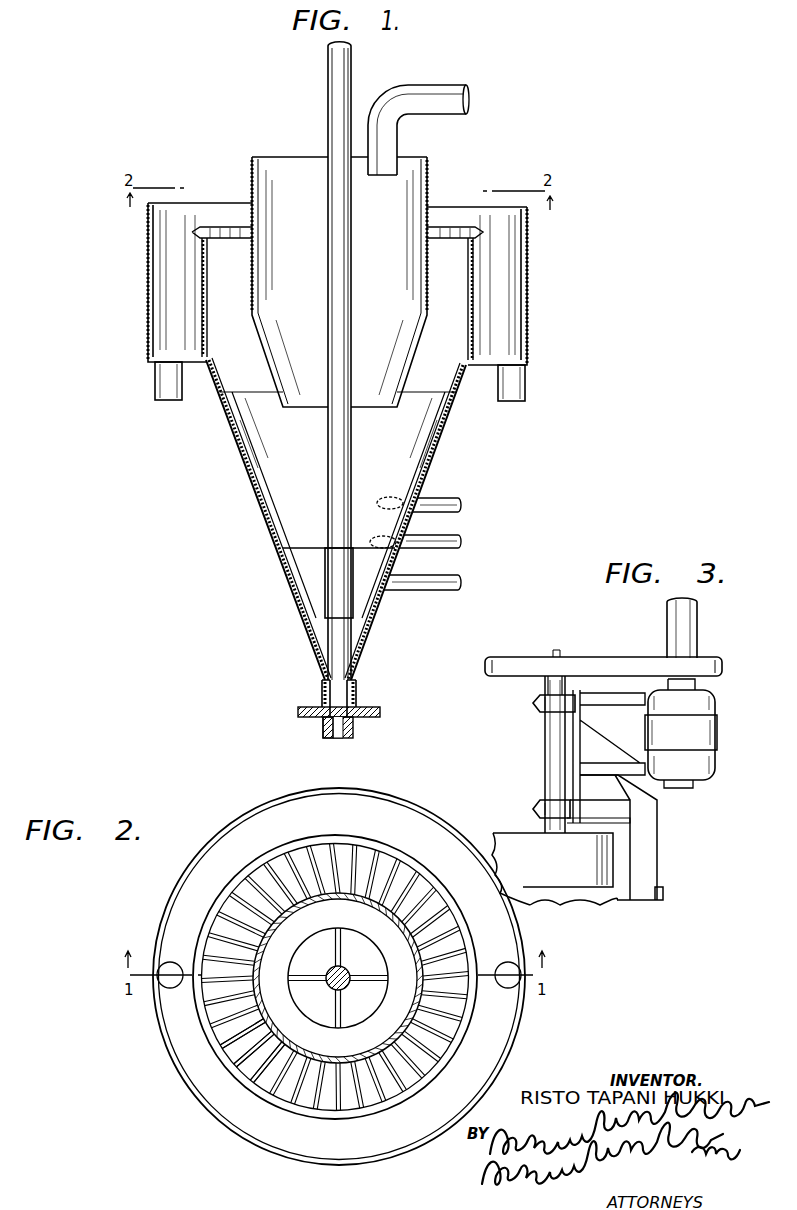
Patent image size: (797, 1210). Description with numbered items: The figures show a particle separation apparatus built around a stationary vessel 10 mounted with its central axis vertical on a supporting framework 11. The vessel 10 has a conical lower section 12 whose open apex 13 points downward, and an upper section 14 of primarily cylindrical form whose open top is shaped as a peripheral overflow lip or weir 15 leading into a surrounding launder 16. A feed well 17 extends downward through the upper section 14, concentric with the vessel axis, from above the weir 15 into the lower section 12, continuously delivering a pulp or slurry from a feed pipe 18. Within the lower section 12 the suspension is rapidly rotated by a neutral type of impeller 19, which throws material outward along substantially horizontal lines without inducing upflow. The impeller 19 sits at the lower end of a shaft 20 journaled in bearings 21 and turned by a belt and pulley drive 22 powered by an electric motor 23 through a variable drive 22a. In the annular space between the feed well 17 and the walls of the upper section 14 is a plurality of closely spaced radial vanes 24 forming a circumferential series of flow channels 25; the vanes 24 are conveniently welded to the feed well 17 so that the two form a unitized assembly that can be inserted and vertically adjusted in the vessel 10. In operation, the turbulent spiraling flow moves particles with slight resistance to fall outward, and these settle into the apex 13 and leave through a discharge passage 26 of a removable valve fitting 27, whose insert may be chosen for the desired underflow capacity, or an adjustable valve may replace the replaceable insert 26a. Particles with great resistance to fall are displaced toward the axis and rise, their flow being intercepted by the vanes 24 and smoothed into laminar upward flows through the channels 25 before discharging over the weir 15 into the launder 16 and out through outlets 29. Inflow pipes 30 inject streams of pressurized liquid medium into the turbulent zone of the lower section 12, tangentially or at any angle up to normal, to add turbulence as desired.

In FIG. 1, the stationary vessel 10 is at (454, 468).
In FIG. 3, the supporting framework 11 is at (650, 836).
In FIG. 1, the lower section 12 is at (262, 518).
In FIG. 1, the apex 13 is at (356, 693).
In FIG. 1, the upper section 14 is at (203, 308).
In FIG. 1, the peripheral overflow lip or weir 15 is at (197, 232).
In FIG. 2, the peripheral overflow lip or weir 15 is at (420, 868).
In FIG. 1, the launder 16 is at (162, 268).
In FIG. 3, the launder 16 is at (617, 900).
In FIG. 2, the launder 16 is at (217, 1118).
In FIG. 1, the feed well 17 is at (430, 178).
In FIG. 3, the feed well 17 is at (583, 873).
In FIG. 2, the feed well 17 is at (270, 933).
In FIG. 1, the feed pipe 18 is at (442, 92).
In FIG. 1, the impeller 19 is at (313, 575).
In FIG. 1, the shaft 20 is at (330, 90).
In FIG. 3, the shaft 20 is at (548, 750).
In FIG. 2, the shaft 20 is at (349, 968).
In FIG. 3, the bearings 21 is at (535, 702).
In FIG. 3, the belt and pulley drive 22 is at (603, 663).
In FIG. 3, the variable drive 22a is at (686, 629).
In FIG. 3, the electric motor 23 is at (703, 740).
In FIG. 1, the radial vanes 24 is at (235, 365).
In FIG. 2, the radial vanes 24 is at (240, 900).
In FIG. 2, the flow channels 25 is at (268, 1075).
In FIG. 1, the discharge passage 26 is at (340, 735).
In FIG. 1, the replaceable insert 26a is at (323, 728).
In FIG. 1, the removable valve fitting 27 is at (355, 728).
In FIG. 1, the outlets 29 is at (160, 380).
In FIG. 2, the outlets 29 is at (172, 990).
In FIG. 1, the inflow pipes 30 is at (460, 580).